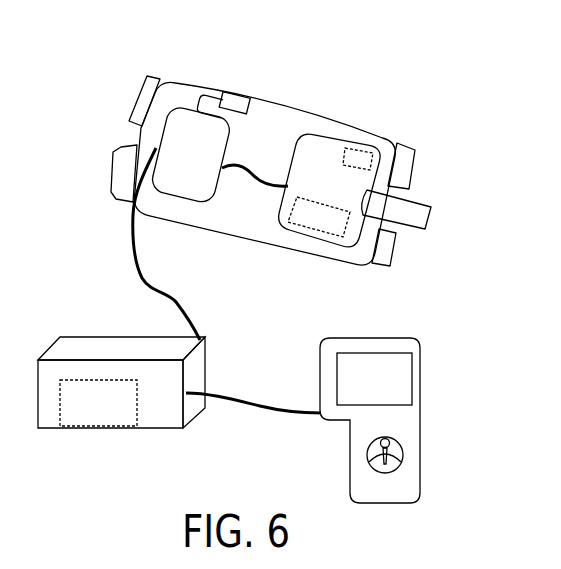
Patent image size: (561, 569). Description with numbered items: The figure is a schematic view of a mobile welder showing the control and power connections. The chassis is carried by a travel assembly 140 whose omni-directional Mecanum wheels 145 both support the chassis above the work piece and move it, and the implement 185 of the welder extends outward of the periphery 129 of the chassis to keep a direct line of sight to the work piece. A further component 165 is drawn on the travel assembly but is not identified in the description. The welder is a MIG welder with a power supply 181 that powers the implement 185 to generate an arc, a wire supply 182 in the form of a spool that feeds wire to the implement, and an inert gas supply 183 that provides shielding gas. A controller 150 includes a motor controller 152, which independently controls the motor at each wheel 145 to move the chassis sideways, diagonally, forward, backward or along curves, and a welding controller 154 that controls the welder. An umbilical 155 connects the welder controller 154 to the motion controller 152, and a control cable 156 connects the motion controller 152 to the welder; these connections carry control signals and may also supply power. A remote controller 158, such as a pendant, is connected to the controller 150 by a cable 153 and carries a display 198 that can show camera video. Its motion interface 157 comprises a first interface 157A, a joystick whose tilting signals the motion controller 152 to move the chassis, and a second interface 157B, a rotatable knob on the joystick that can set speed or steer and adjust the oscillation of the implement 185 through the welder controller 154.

The travel assembly 140 is at (121, 106).
The periphery 129 is at (293, 107).
The Mecanum wheel 145 is at (141, 80).
The sensor 165 is at (236, 100).
The motor controller 152 is at (208, 164).
The welding controller 154 is at (331, 178).
The control cable 156 is at (243, 163).
The inert gas supply 183 is at (361, 136).
The wire supply 182 is at (314, 222).
The implement 185 is at (431, 208).
The umbilical 155 is at (143, 276).
The controller 150 is at (79, 339).
The power supply 181 is at (87, 418).
The cable 153 is at (251, 393).
The remote controller 158 is at (424, 373).
The display 198 is at (386, 384).
The motion interface 157 is at (402, 437).
The first interface 157A is at (407, 456).
The second interface 157B is at (372, 446).